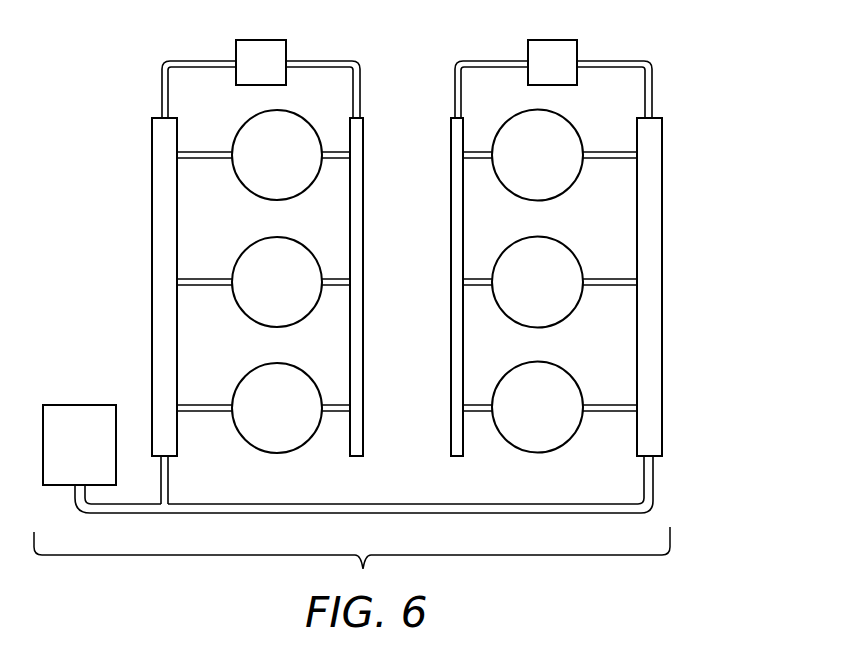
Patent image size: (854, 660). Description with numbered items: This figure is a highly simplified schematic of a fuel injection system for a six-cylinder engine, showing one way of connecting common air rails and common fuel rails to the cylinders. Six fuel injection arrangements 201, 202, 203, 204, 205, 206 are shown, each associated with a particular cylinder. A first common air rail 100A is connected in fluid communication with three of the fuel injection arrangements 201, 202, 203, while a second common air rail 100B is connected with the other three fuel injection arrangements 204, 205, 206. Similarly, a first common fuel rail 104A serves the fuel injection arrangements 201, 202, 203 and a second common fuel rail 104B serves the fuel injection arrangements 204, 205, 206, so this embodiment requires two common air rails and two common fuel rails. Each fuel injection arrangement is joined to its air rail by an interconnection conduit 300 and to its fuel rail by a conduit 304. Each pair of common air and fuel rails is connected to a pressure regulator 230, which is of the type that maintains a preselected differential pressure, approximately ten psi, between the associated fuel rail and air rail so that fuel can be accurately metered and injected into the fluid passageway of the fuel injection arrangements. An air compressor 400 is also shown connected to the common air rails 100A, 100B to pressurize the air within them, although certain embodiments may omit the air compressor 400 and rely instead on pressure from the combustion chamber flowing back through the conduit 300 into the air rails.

The first common air rail 100A is at (160, 202).
The second common air rail 100B is at (662, 160).
The first common fuel rail 104A is at (364, 134).
The second common fuel rail 104B is at (451, 195).
The fuel injection arrangement 201 is at (295, 168).
The fuel injection arrangement 202 is at (295, 296).
The fuel injection arrangement 203 is at (295, 421).
The fuel injection arrangement 204 is at (555, 168).
The fuel injection arrangement 205 is at (555, 296).
The fuel injection arrangement 206 is at (555, 421).
The pressure regulator 230 is at (258, 45).
The conduit 300 is at (203, 160).
The conduit 304 is at (332, 160).
The air compressor 400 is at (95, 461).